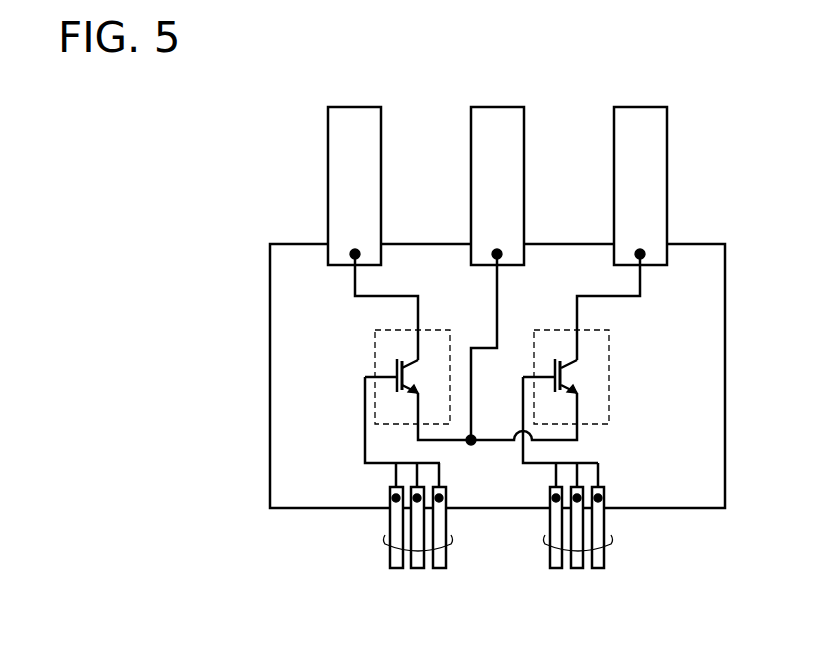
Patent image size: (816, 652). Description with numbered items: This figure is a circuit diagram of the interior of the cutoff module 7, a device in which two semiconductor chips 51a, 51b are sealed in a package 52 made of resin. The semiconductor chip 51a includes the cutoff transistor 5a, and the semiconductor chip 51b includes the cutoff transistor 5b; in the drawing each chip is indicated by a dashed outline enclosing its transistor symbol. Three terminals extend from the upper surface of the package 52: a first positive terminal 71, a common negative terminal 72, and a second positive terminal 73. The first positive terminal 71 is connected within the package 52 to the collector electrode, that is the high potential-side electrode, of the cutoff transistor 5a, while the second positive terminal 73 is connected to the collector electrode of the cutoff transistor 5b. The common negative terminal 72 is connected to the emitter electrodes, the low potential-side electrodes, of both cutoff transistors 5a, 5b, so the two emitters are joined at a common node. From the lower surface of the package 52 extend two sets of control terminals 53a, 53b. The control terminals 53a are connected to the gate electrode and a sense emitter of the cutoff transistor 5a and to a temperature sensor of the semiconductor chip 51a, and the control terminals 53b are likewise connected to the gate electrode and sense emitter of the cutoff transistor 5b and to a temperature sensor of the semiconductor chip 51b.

The cutoff module 7 is at (271, 216).
The package 52 is at (702, 255).
The first positive terminal 71 is at (360, 117).
The common negative terminal 72 is at (501, 117).
The second positive terminal 73 is at (643, 117).
The semiconductor chip 51a is at (378, 332).
The semiconductor chip 51b is at (610, 352).
The cutoff transistor 5a is at (397, 372).
The cutoff transistor 5b is at (555, 374).
The control terminals 53a is at (384, 548).
The control terminals 53b is at (544, 548).